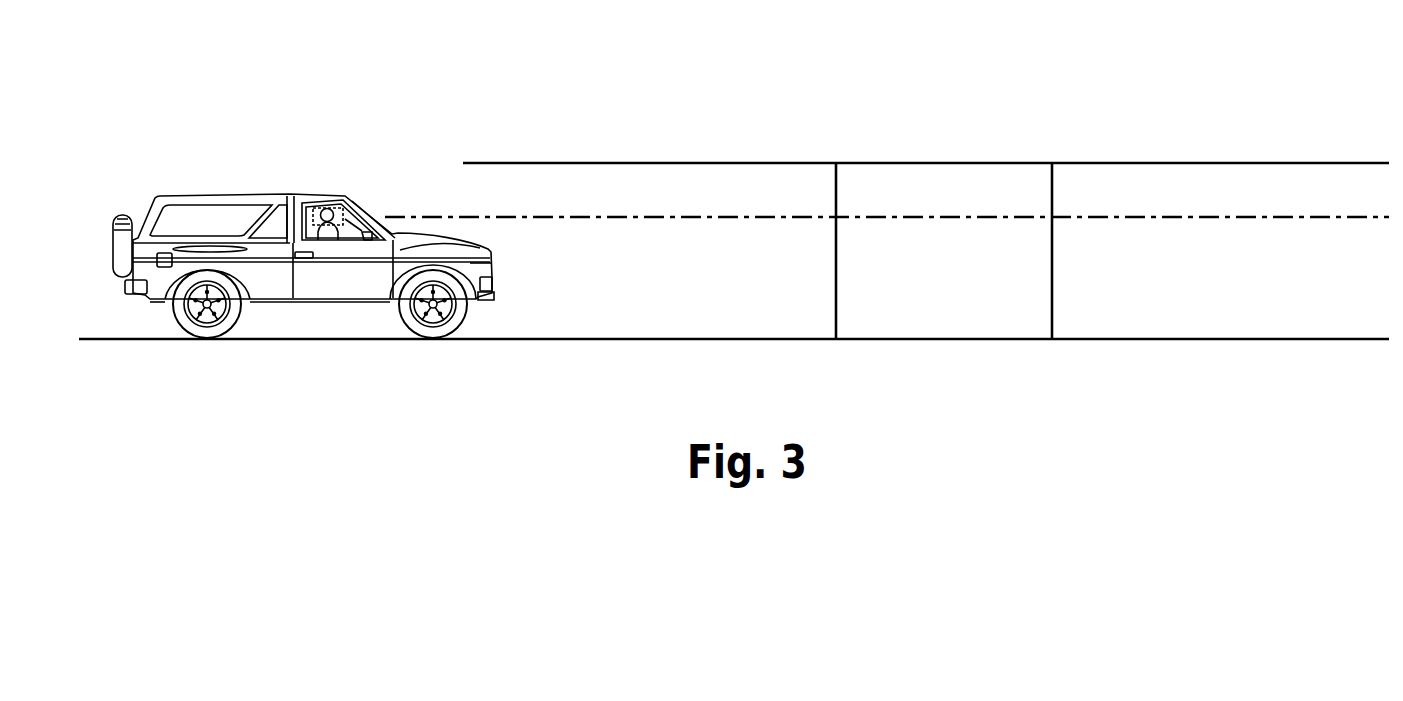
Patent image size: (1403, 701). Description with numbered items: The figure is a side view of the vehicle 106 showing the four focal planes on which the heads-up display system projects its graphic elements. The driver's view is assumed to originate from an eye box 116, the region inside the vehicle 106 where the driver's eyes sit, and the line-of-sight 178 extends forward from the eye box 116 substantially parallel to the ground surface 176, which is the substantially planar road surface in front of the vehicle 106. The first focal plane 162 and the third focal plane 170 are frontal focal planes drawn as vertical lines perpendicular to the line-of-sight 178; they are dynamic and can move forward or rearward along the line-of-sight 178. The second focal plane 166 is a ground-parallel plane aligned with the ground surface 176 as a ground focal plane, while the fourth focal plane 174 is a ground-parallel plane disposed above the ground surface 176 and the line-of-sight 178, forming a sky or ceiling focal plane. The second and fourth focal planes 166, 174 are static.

The vehicle 106 is at (142, 182).
The eye box 116 is at (322, 197).
The line-of-sight 178 is at (437, 217).
The fourth focal plane 174 is at (1144, 163).
The second focal plane 166 is at (552, 340).
The first focal plane 162 is at (836, 291).
The third focal plane 170 is at (1052, 291).
The ground surface 176 is at (1166, 340).